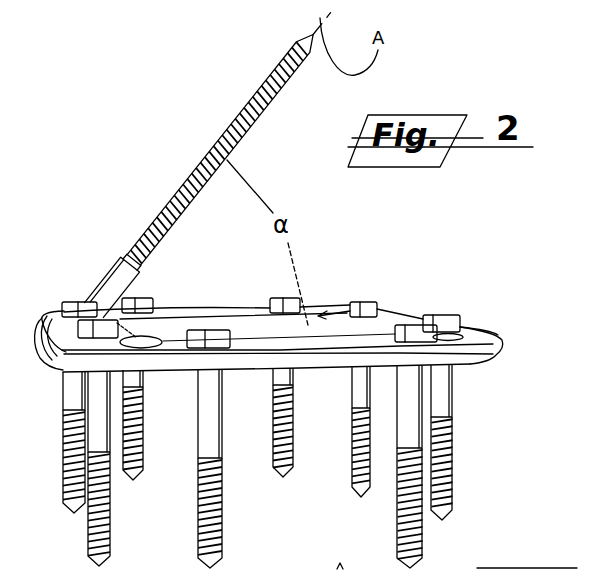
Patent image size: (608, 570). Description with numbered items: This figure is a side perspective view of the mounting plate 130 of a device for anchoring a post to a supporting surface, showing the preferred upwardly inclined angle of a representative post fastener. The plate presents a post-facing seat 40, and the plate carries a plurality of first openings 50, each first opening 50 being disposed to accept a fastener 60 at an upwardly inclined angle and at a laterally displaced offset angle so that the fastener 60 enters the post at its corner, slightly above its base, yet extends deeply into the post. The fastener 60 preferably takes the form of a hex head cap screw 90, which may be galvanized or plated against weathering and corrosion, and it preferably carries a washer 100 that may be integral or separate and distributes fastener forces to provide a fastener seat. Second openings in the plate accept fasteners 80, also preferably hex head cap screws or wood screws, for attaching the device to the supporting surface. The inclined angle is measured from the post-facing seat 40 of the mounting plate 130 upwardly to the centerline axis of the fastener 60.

The post-facing seat 40 is at (377, 327).
The first opening 50 is at (140, 341).
The fastener 60 is at (240, 110).
The fastener 80 is at (453, 413).
The hex head cap screw 90 is at (57, 368).
The washer 100 is at (37, 345).
The mounting plate 130 is at (502, 340).